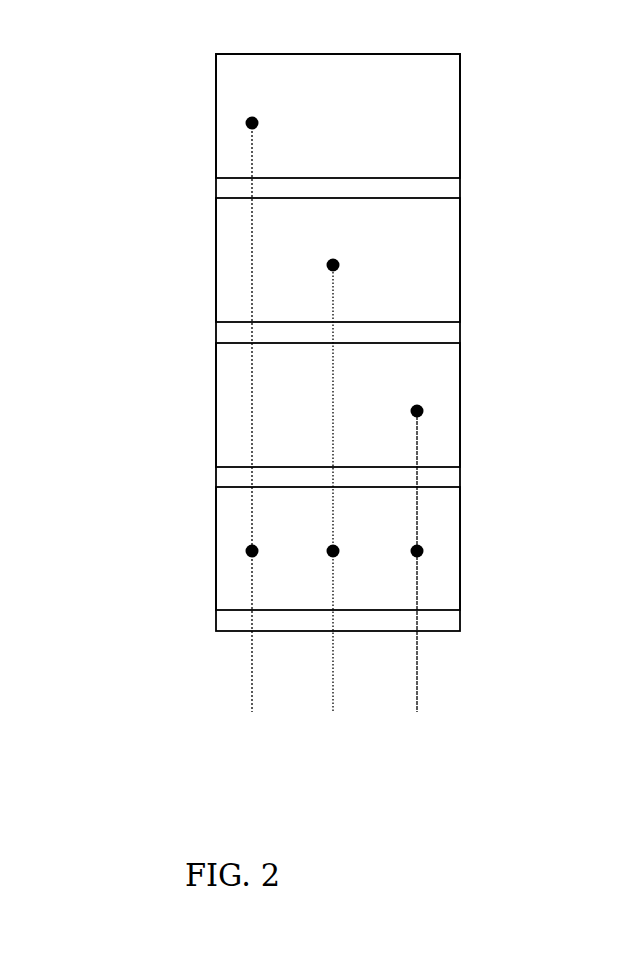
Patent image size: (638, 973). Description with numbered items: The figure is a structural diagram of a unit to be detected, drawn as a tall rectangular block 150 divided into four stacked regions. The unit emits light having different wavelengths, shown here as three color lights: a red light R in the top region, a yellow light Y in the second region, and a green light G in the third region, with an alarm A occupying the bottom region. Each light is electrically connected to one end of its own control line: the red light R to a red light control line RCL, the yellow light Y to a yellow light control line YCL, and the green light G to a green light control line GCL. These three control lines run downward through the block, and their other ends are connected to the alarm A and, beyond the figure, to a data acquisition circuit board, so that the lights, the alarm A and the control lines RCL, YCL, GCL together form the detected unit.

The pixel 150 is at (86, 141).
The red light R is at (216, 116).
The yellow light Y is at (216, 260).
The green light G is at (216, 416).
The alarm A is at (216, 556).
The red light control line RCL is at (257, 428).
The yellow light control line YCL is at (337, 499).
The green light control line GCL is at (421, 572).